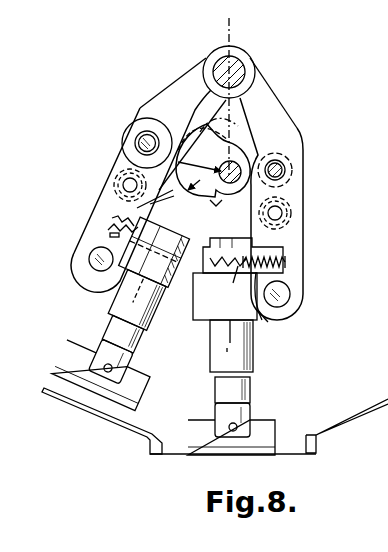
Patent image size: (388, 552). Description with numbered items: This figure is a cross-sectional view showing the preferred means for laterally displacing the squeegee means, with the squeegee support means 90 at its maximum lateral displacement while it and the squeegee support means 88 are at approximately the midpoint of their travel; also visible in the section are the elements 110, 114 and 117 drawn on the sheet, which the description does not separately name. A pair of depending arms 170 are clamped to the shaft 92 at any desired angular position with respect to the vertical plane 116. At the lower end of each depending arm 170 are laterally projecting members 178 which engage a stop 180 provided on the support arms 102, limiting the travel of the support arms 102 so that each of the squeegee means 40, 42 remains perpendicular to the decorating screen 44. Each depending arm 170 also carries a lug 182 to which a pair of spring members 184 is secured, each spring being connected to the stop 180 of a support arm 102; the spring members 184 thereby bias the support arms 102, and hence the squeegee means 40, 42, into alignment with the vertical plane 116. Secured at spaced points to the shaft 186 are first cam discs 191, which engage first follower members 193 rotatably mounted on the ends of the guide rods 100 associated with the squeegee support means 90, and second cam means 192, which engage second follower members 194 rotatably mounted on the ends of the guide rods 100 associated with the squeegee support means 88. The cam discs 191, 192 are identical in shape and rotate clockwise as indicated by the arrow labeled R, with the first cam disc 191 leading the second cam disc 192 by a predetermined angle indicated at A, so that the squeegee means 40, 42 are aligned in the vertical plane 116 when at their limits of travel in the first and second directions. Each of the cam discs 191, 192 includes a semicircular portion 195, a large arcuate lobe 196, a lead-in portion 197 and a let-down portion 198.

The squeegee means 40 is at (254, 352).
The squeegee means 42 is at (141, 334).
The decorating screen 44 is at (283, 455).
The squeegee support means 88 is at (306, 274).
The squeegee support means 90 is at (112, 151).
The shaft 92 is at (236, 58).
The guide rods 100 is at (137, 141).
The support arms 102 is at (163, 93).
The roller 110 is at (112, 176).
The pad 114 is at (200, 420).
The vertical plane 116 is at (230, 332).
The ramp 117 is at (110, 430).
The depending arms 170 is at (230, 278).
The laterally projecting members 178 is at (271, 331).
The stop 180 is at (116, 222).
The lug 182 is at (236, 280).
The spring members 184 is at (124, 240).
The shaft 186 is at (195, 140).
The first cam discs 191 is at (205, 124).
The second cam means 192 is at (214, 202).
The first follower members 193 is at (131, 122).
The second follower members 194 is at (279, 161).
The semicircular portion 195 is at (262, 140).
The large arcuate lobe 196 is at (138, 208).
The lead-in portion 197 is at (230, 134).
The let-down portion 198 is at (231, 232).